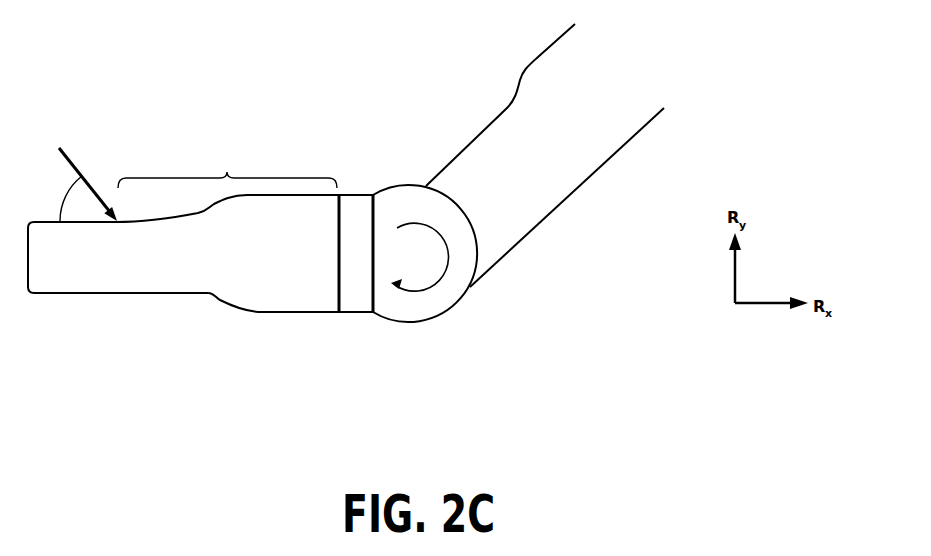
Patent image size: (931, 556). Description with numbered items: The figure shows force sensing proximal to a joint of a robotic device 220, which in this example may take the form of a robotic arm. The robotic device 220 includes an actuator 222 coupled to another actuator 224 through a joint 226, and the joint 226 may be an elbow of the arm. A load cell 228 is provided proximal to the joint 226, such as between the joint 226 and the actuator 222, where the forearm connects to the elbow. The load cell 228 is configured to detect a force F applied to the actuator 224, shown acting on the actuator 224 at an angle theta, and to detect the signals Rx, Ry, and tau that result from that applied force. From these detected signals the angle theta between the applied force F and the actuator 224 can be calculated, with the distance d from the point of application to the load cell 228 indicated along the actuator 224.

The robotic device 220 is at (127, 40).
The actuator 222 is at (549, 224).
The actuator 224 is at (128, 294).
The joint 226 is at (416, 322).
The load cell 228 is at (350, 314).